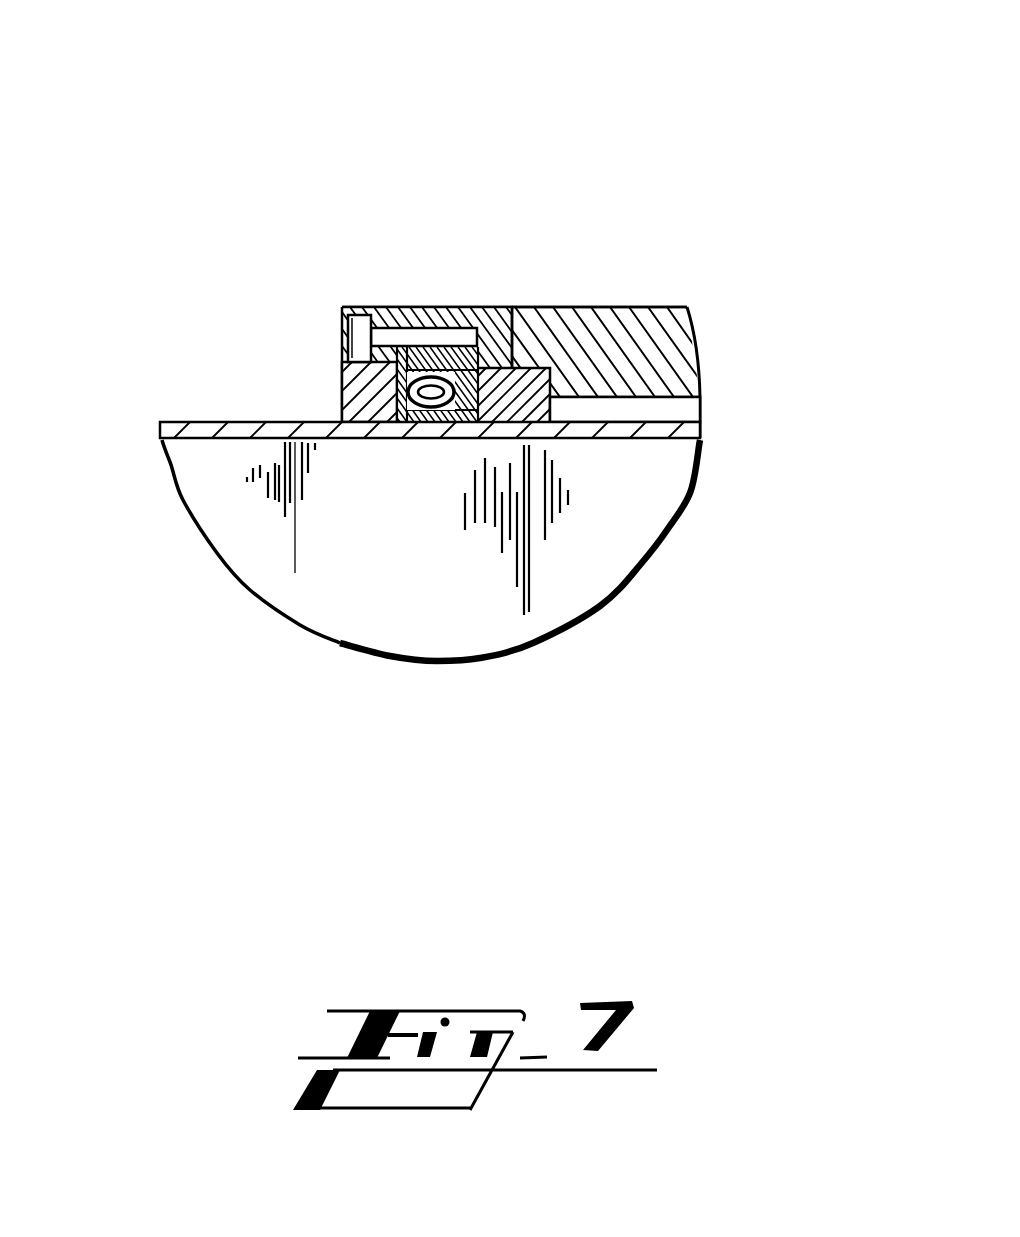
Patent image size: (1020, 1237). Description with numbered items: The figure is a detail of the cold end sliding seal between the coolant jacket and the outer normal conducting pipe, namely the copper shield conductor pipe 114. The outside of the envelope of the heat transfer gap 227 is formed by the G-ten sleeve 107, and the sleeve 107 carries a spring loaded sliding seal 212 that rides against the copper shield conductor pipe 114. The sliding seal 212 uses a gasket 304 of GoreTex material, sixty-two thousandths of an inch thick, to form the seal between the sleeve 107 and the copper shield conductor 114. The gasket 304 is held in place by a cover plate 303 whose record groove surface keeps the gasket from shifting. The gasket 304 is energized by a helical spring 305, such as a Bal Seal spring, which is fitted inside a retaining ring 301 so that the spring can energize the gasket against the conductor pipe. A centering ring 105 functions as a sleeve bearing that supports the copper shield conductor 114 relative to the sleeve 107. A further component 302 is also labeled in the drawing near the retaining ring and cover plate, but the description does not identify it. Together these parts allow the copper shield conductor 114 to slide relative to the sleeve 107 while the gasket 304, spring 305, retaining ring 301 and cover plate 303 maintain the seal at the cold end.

The spring loaded sliding seal 212 is at (595, 100).
The bracket block 302 is at (342, 310).
The retaining ring 301 is at (445, 328).
The centering ring 105 is at (507, 307).
The G-10 sleeve 107 is at (700, 340).
The cover plate 303 is at (342, 389).
The GoreTex gasket material 304 is at (420, 405).
The helical spring 305 is at (428, 420).
The heat transfer gap 227 is at (703, 408).
The copper shield conductor pipe 114 is at (703, 428).